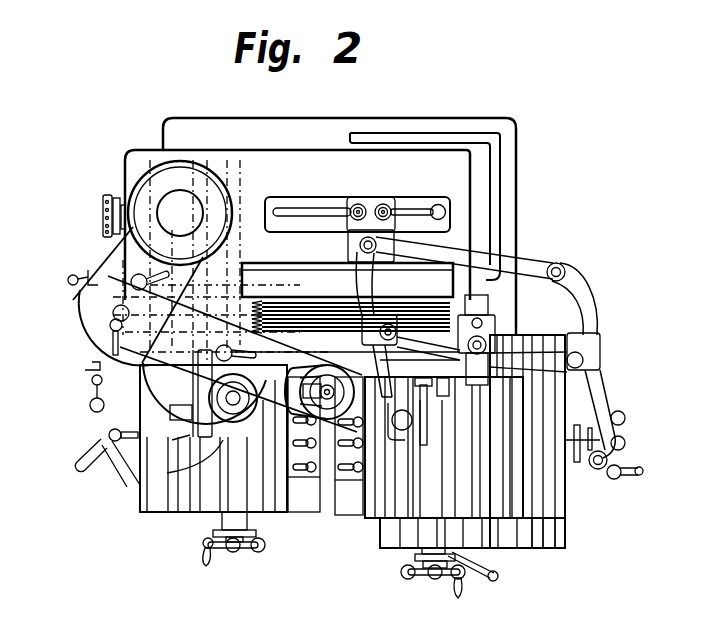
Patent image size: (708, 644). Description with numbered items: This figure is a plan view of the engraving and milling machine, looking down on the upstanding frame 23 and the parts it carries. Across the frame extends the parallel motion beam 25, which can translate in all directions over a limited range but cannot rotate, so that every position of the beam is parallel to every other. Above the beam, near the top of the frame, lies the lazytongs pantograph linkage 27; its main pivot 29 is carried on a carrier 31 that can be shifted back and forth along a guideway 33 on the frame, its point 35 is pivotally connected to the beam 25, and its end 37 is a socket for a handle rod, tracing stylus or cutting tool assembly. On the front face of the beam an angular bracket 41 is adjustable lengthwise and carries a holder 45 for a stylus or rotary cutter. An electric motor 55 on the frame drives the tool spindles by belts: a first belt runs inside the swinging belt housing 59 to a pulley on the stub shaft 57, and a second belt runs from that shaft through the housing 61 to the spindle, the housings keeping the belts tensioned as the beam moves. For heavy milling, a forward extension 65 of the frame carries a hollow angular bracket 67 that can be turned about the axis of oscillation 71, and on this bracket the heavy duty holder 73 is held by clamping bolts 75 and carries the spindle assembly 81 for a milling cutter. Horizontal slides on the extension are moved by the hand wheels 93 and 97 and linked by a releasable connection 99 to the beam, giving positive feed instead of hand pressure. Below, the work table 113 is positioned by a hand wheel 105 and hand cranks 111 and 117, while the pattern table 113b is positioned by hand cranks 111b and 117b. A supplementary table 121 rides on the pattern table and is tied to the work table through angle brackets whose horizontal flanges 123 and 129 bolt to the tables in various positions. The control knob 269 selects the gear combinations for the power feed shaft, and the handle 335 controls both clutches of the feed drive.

The frame 23 is at (292, 172).
The parallel motion beam 25 is at (439, 378).
The pantograph linkage 27 is at (580, 302).
The main pivot 29 is at (392, 242).
The carrier 31 is at (372, 207).
The guideway 33 is at (323, 207).
The point of pantograph linkage 35 is at (476, 340).
The end of pantograph linkage 37 is at (597, 470).
The angular bracket 41 is at (425, 447).
The holder 45 is at (392, 432).
The electric motor 55 is at (183, 196).
The stub shaft 57 is at (113, 311).
The belt housing 59 is at (85, 336).
The housing 61 is at (213, 330).
The forward extension 65 is at (225, 282).
The hollow angular bracket 67 is at (172, 420).
The axis of oscillation 71 is at (178, 447).
The heavy duty holder 73 is at (226, 428).
The clamping bolts 75 is at (186, 466).
The spindle assembly 81 is at (244, 399).
The hand wheel 93 is at (184, 386).
The hand wheel 97 is at (88, 366).
The releasable connection 99 is at (302, 334).
The hand wheel 105 is at (80, 472).
The hand crank 111 is at (90, 402).
The hand crank 111b is at (466, 580).
The work table 113 is at (158, 502).
The pattern table 113b is at (556, 527).
The hand crank 117 is at (259, 553).
The hand crank 117b is at (632, 479).
The supplementary table 121 is at (383, 505).
The horizontal flange 123 is at (303, 472).
The horizontal flange 129 is at (348, 472).
The control knob 269 is at (103, 203).
The handle 335 is at (70, 276).